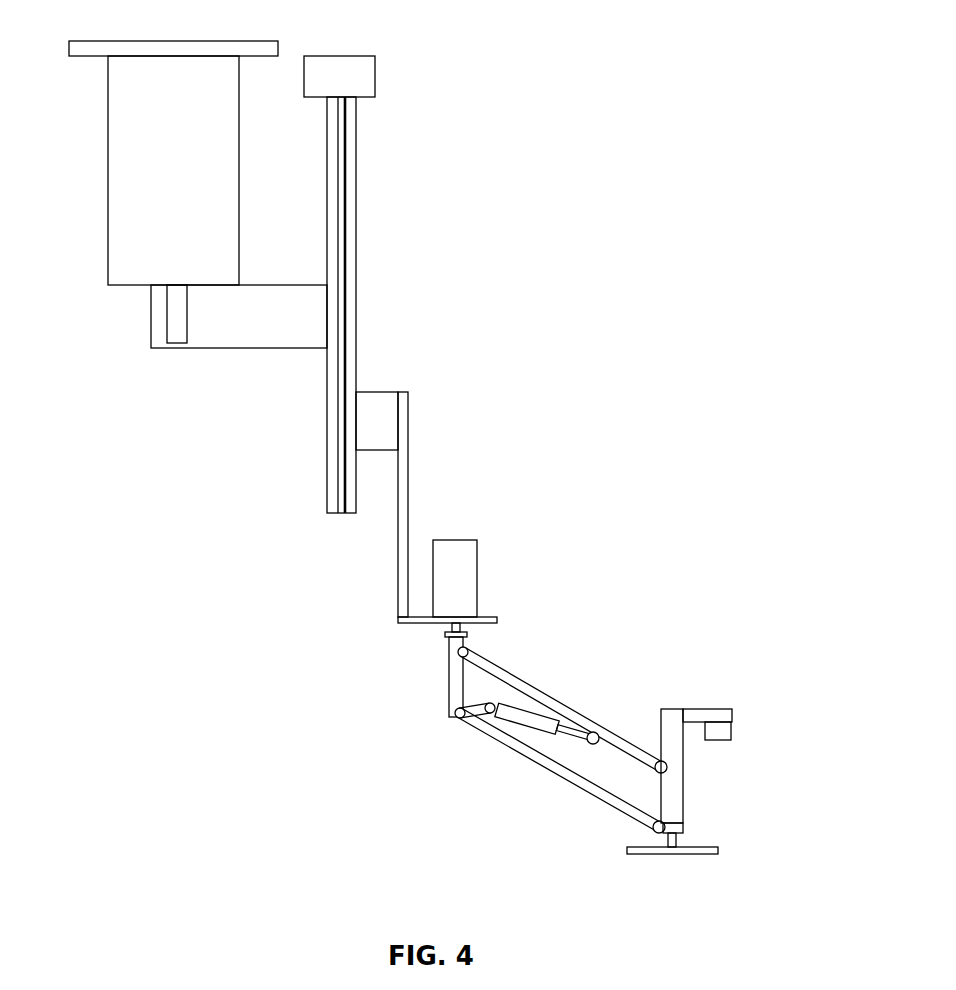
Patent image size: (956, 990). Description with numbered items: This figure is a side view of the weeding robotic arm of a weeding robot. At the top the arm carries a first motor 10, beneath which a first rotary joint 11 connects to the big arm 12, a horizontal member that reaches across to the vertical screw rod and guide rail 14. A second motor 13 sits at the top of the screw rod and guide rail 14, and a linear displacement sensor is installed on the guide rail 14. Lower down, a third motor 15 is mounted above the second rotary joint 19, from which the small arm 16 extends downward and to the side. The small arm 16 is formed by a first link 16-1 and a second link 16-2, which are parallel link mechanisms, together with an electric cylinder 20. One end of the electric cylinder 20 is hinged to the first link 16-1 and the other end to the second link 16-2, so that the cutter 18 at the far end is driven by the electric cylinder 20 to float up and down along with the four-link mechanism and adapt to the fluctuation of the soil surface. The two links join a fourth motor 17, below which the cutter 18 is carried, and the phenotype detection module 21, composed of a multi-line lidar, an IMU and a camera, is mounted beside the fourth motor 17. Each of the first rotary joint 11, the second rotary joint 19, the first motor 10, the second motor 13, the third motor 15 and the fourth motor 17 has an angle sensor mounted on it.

The first motor 10 is at (108, 158).
The first rotary joint 11 is at (168, 313).
The big arm 12 is at (207, 349).
The second motor 13 is at (375, 75).
The screw rod and guide rail 14 is at (357, 215).
The third motor 15 is at (470, 583).
The small arm 16 is at (655, 649).
The first link 16-1 is at (507, 668).
The second link 16-2 is at (555, 782).
The fourth motor 17 is at (675, 803).
The cutter 18 is at (713, 850).
The second rotary joint 19 is at (440, 637).
The electric cylinder 20 is at (543, 733).
The phenotype detection module 21 is at (720, 713).